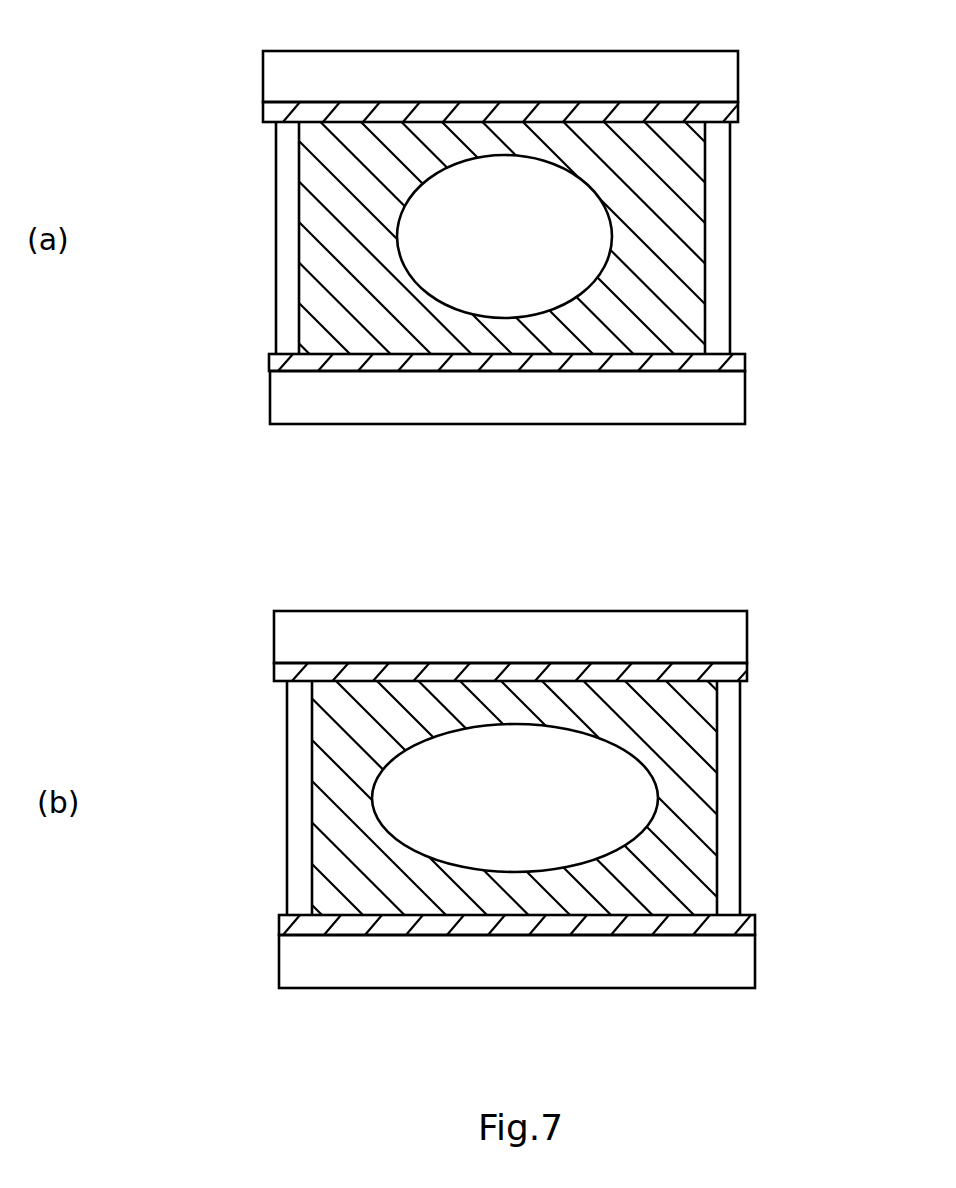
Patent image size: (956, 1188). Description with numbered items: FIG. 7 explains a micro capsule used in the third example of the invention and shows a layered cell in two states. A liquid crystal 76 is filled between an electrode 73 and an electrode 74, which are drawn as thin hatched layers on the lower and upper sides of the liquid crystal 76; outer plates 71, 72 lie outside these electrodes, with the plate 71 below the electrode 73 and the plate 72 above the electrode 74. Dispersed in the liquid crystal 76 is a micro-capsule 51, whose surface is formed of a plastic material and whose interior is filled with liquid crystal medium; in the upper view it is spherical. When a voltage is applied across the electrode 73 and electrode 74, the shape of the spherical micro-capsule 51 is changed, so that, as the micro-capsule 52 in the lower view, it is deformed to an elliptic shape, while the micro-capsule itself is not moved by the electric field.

The lower substrate 71 is at (730, 412).
The upper substrate 72 is at (725, 70).
The electrode 73 is at (720, 368).
The electrode 74 is at (723, 112).
The liquid crystal 76 is at (678, 167).
The micro-capsule 51 is at (563, 232).
The micro-capsule 52 is at (603, 795).